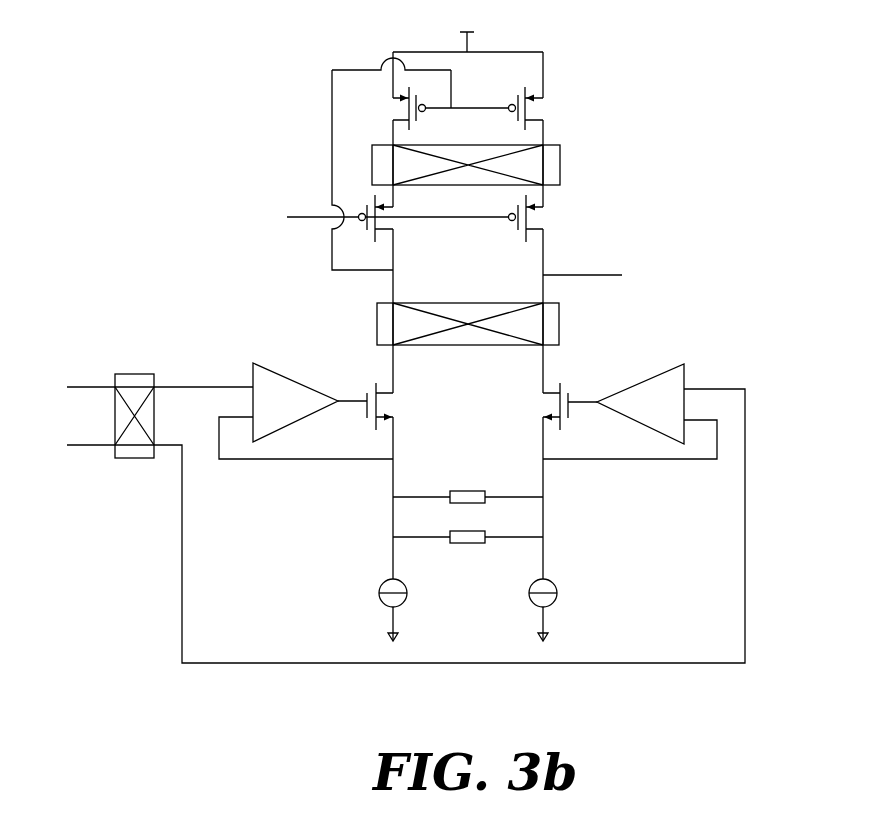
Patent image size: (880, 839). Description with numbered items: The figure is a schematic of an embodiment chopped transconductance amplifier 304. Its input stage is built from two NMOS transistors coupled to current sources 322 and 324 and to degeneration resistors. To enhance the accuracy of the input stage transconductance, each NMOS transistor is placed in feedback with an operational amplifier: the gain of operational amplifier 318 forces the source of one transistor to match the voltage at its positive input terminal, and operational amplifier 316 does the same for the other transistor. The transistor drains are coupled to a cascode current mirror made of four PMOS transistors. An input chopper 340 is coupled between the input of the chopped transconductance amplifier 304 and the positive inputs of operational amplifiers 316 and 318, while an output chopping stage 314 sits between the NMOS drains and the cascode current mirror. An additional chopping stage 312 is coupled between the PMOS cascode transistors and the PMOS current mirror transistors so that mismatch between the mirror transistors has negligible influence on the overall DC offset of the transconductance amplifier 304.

The chopped transconductance amplifier 304 is at (97, 42).
The additional chopping stage 312 is at (560, 157).
The output chopping stage 314 is at (559, 317).
The operational amplifier 316 is at (686, 370).
The operational amplifier 318 is at (251, 369).
The current source 322 is at (381, 585).
The current source 324 is at (555, 585).
The input chopper 340 is at (141, 374).